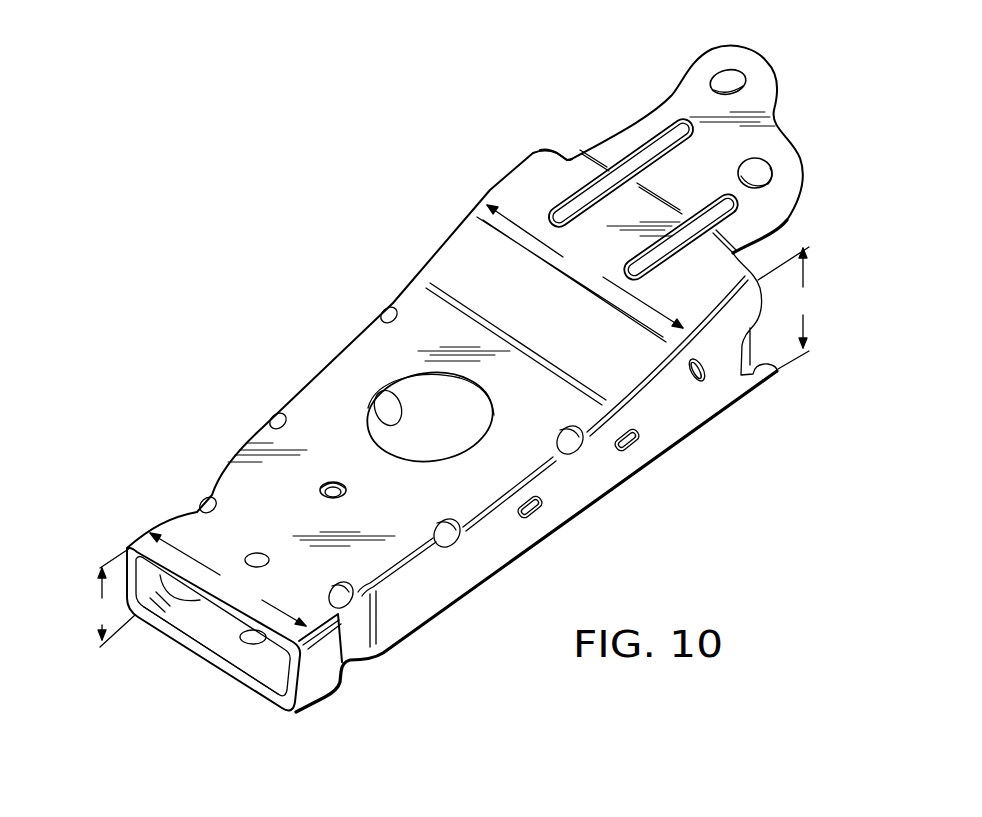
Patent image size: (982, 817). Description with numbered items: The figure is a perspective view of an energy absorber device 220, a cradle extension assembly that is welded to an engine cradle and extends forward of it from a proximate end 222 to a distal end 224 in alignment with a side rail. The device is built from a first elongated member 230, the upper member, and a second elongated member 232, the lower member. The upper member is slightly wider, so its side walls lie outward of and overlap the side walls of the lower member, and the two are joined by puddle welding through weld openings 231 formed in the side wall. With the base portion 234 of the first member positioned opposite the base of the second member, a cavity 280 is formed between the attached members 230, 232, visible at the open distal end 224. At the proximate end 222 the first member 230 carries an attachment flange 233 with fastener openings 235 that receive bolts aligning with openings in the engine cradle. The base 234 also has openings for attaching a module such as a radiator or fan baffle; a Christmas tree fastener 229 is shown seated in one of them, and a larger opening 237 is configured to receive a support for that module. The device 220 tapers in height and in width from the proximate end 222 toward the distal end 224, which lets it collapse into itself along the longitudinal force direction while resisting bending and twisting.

The energy absorber device 220 is at (305, 307).
The proximate end 222 is at (567, 158).
The distal end 224 is at (157, 645).
The Christmas tree fastener 229 is at (337, 482).
The first elongated member 230 is at (465, 255).
The weld openings 231 is at (707, 377).
The second elongated member 232 is at (193, 665).
The attachment flange 233 is at (647, 117).
The base portion 234 is at (240, 497).
The fastener openings 235 is at (733, 83).
The larger opening 237 is at (433, 427).
The cavity 280 is at (218, 628).